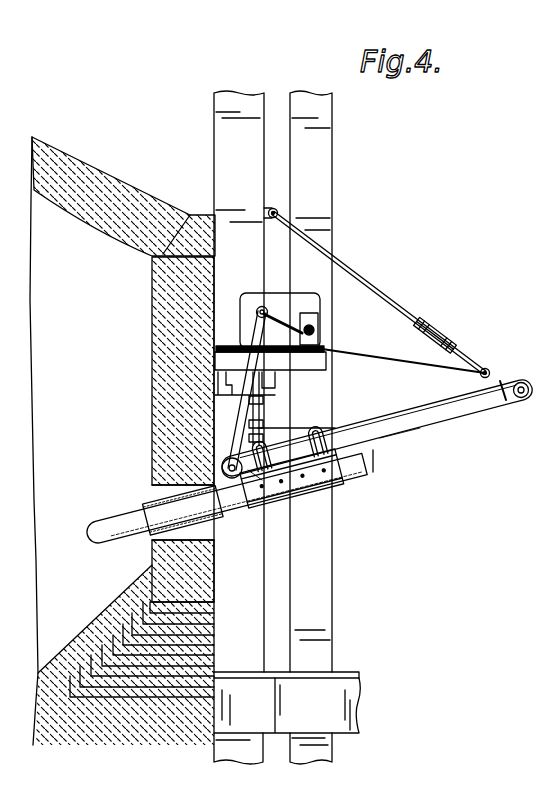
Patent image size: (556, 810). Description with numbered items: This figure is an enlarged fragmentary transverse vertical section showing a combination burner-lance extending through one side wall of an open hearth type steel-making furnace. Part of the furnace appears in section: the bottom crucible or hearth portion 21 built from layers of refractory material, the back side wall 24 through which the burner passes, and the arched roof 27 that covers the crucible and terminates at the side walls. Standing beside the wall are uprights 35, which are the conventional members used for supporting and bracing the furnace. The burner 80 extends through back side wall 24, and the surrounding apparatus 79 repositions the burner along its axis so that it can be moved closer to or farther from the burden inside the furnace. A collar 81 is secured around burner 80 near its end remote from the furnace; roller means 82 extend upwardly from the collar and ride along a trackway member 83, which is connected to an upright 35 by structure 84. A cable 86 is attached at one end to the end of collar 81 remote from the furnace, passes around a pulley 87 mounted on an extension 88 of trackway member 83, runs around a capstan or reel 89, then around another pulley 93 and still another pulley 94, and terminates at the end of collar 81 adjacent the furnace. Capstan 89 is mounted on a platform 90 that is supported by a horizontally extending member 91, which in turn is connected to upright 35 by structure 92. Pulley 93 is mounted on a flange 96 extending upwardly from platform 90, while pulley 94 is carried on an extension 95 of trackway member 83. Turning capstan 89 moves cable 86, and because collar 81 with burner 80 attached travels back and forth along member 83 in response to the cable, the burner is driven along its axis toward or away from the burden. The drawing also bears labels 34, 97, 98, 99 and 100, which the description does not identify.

The hearth portion 21 is at (89, 617).
The back side wall 24 is at (152, 320).
The arched roof 27 is at (112, 174).
The sleeve 34 is at (135, 512).
The uprights 35 is at (258, 108).
The repositioning apparatus 79 is at (385, 462).
The burner 80 is at (108, 530).
The collar 81 is at (312, 498).
The roller means 82 is at (322, 440).
The trackway member 83 is at (404, 410).
The connecting structure 84 is at (272, 424).
The cable 86 is at (400, 440).
The pulley 87 is at (523, 384).
The extension 88 is at (514, 402).
The capstan 89 is at (320, 337).
The platform 90 is at (257, 372).
The horizontally extending member 91 is at (327, 363).
The connecting structure 92 is at (272, 388).
The pulley 93 is at (259, 306).
The pulley 94 is at (222, 462).
The extension 95 is at (252, 480).
The flange 96 is at (301, 297).
The pivot pin 97 is at (486, 367).
The tie rod 98 is at (395, 303).
The pivot 99 is at (280, 212).
The turnbuckle 100 is at (437, 332).